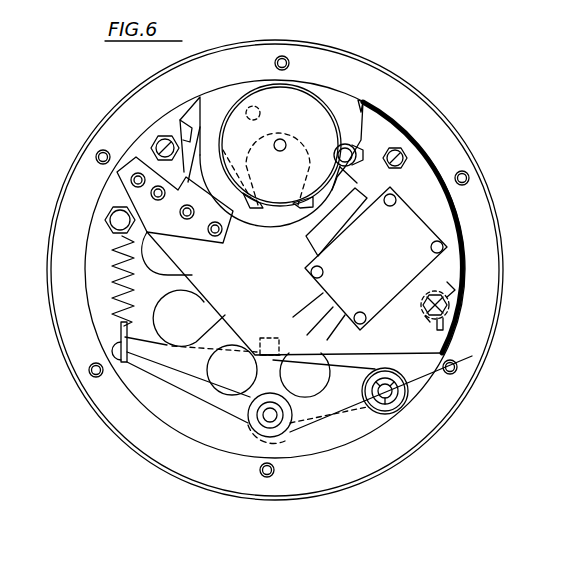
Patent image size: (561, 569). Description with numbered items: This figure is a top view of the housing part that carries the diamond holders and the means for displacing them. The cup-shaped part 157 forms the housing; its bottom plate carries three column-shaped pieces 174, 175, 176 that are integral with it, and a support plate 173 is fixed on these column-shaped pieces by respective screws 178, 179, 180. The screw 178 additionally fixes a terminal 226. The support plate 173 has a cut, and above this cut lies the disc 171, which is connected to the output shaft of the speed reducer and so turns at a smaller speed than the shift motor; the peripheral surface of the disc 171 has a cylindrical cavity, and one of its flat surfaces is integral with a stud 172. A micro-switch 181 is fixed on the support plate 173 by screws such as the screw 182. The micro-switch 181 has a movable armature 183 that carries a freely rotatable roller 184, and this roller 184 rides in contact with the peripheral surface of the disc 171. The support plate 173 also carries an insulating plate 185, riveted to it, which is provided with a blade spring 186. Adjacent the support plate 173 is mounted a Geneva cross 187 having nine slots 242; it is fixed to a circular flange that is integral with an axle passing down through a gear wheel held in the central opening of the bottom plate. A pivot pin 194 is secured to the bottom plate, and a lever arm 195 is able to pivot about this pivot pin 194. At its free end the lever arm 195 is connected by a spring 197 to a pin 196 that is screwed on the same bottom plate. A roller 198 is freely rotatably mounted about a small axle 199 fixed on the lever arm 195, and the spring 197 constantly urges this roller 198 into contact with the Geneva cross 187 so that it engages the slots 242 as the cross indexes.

The cup-shaped part 157 is at (143, 452).
The disc 171 is at (305, 90).
The stud 172 is at (246, 113).
The support plate 173 is at (180, 117).
The column-shaped piece 174 is at (447, 297).
The column-shaped piece 175 is at (400, 148).
The column-shaped piece 176 is at (155, 136).
The screw 178 is at (432, 312).
The screw 179 is at (407, 150).
The screw 180 is at (152, 150).
The micro-switch 181 is at (388, 290).
The screw 182 is at (444, 247).
The movable armature 183 is at (353, 172).
The roller 184 is at (352, 150).
The insulating plate 185 is at (140, 193).
The blade spring 186 is at (178, 117).
The Geneva cross 187 is at (263, 150).
The pivot pin 194 is at (389, 398).
The lever arm 195 is at (202, 392).
The pin 196 is at (108, 228).
The spring 197 is at (116, 272).
The roller 198 is at (262, 430).
The small axle 199 is at (283, 428).
The terminal 226 is at (432, 322).
The slot 242 is at (310, 194).